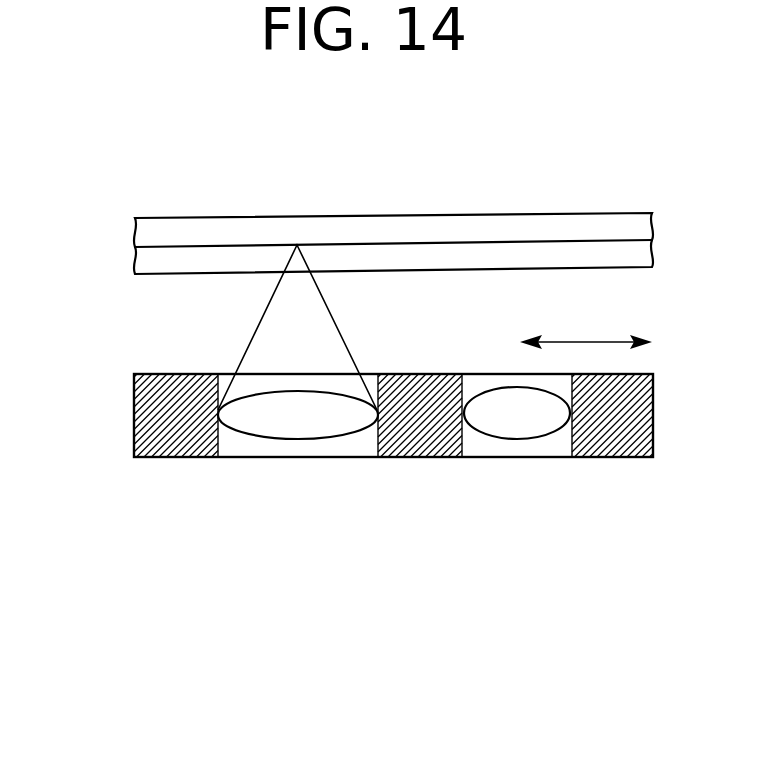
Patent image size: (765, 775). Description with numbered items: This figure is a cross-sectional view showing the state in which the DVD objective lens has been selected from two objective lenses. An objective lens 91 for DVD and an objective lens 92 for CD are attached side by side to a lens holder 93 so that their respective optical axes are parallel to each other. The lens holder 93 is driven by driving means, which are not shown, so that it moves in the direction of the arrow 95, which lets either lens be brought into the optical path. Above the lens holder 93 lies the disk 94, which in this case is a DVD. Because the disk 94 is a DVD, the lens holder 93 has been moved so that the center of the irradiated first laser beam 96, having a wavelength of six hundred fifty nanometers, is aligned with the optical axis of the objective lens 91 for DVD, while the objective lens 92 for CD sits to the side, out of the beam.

The objective lens for DVD 91 is at (276, 428).
The objective lens for CD 92 is at (519, 425).
The lens holder 93 is at (134, 418).
The disk 94 is at (238, 216).
The arrow 95 is at (591, 342).
The first laser beam 96 is at (257, 330).